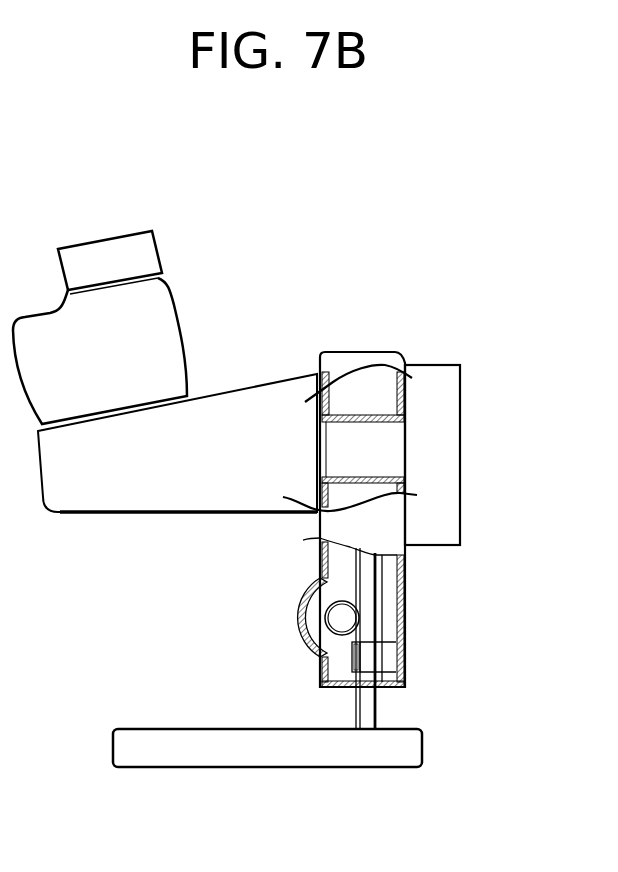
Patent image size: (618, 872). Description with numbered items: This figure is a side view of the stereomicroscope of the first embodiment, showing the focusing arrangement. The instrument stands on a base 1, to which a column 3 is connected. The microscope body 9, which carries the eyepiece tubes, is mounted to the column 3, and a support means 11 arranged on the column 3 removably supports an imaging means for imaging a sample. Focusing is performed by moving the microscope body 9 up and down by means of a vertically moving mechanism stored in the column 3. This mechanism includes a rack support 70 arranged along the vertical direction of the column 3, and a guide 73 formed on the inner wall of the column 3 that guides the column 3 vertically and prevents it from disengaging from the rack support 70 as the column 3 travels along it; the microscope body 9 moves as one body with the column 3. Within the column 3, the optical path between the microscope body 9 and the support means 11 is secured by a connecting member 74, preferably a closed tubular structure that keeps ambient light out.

The base 1 is at (243, 753).
The column 3 is at (350, 362).
The microscope body 9 is at (245, 408).
The support means 11 is at (428, 377).
The rack support 70 is at (355, 570).
The guide 73 is at (385, 658).
The connecting member 74 is at (362, 425).